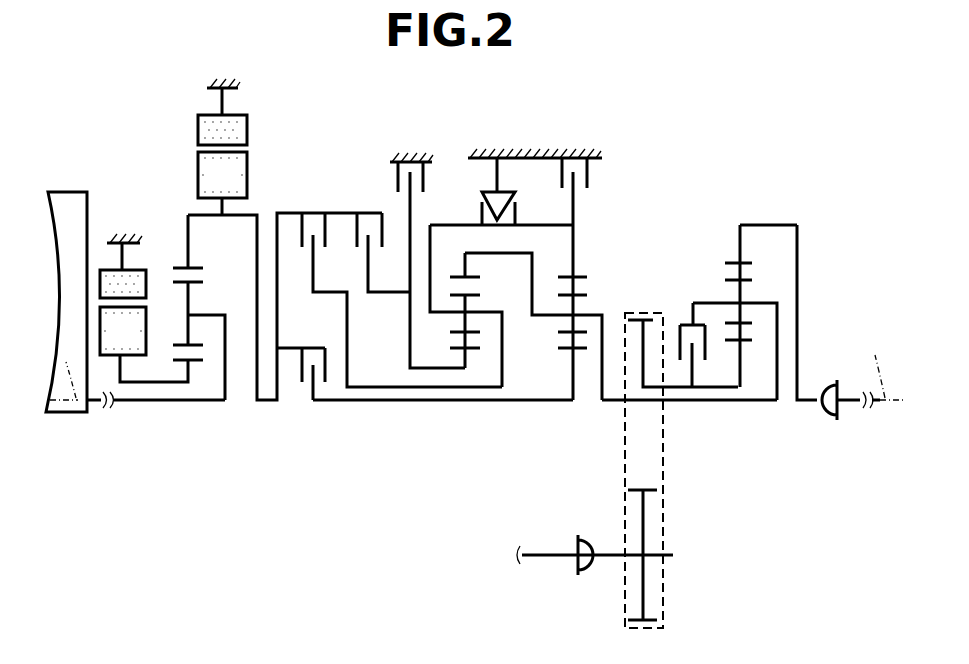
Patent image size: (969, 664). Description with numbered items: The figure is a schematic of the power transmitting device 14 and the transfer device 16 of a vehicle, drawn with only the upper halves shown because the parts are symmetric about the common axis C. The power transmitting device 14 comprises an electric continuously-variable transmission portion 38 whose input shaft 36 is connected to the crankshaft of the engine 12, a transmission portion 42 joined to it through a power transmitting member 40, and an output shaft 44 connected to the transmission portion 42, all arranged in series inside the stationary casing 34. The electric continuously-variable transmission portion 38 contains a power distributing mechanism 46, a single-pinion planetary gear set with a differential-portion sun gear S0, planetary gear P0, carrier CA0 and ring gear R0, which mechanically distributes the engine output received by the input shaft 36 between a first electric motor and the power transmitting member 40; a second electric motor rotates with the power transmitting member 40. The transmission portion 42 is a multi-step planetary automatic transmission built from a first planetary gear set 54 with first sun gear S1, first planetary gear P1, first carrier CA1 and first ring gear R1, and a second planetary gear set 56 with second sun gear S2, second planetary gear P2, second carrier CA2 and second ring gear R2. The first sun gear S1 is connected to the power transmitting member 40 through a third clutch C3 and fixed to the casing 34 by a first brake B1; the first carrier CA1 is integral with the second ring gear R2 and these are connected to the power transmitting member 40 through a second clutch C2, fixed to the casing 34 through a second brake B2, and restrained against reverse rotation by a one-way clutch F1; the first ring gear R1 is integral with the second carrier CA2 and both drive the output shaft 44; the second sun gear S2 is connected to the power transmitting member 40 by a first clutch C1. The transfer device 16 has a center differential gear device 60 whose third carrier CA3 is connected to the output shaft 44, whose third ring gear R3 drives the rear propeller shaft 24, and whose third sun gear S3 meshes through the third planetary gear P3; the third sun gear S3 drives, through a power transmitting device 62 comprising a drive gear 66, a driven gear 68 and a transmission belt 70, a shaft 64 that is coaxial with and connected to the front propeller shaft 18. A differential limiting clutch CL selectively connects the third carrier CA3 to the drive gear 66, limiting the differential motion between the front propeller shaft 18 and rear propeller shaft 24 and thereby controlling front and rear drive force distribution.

The engine 12 is at (66, 192).
The power transmitting device 14 is at (208, 515).
The transfer device 16 is at (702, 300).
The front propeller shaft 18 is at (540, 557).
The rear propeller shaft 24 is at (853, 402).
The transmission casing 34 is at (126, 241).
The input shaft 36 is at (125, 402).
The electric continuously-variable transmission portion 38 is at (168, 231).
The power transmitting member 40 is at (262, 352).
The transmission portion 42 is at (458, 249).
The output shaft 44 is at (604, 402).
The power distributing mechanism 46 is at (173, 188).
The first planetary gear set 54 is at (465, 406).
The second planetary gear set 56 is at (570, 407).
The center differential gear device 60 is at (738, 407).
The power transmitting device 62 is at (624, 562).
The shaft 64 is at (670, 555).
The drive gear 66 is at (650, 312).
The driven gear 68 is at (637, 488).
The transmission belt 70 is at (664, 452).
The differential-portion ring gear R0 is at (195, 268).
The differential-portion planetary gear P0 is at (177, 350).
The differential-portion sun gear S0 is at (192, 362).
The differential-portion carrier CA0 is at (222, 315).
The first clutch C1 is at (302, 361).
The second clutch C2 is at (401, 288).
The third clutch C3 is at (383, 241).
The first brake B1 is at (431, 265).
The second brake B2 is at (592, 217).
The one-way clutch F1 is at (508, 191).
The first ring gear R1 is at (459, 276).
The first planetary gear P1 is at (478, 338).
The first sun gear S1 is at (453, 350).
The first carrier CA1 is at (478, 322).
The second ring gear R2 is at (576, 275).
The second planetary gear P2 is at (572, 331).
The second sun gear S2 is at (570, 351).
The second carrier CA2 is at (596, 313).
The third ring gear R3 is at (752, 262).
The third planetary gear P3 is at (752, 323).
The third sun gear S3 is at (752, 342).
The third carrier CA3 is at (736, 300).
The differential limiting clutch CL is at (690, 323).